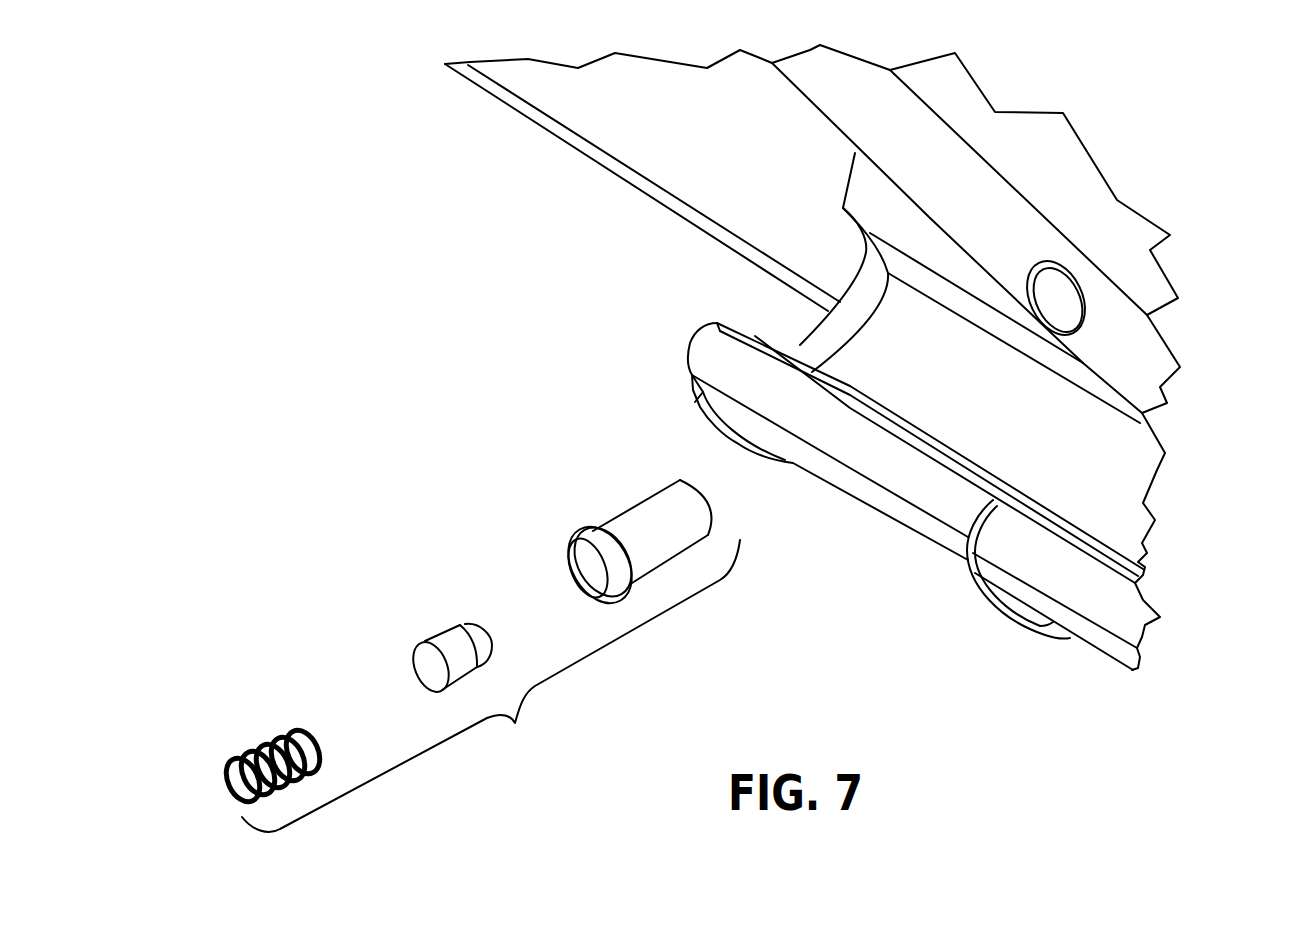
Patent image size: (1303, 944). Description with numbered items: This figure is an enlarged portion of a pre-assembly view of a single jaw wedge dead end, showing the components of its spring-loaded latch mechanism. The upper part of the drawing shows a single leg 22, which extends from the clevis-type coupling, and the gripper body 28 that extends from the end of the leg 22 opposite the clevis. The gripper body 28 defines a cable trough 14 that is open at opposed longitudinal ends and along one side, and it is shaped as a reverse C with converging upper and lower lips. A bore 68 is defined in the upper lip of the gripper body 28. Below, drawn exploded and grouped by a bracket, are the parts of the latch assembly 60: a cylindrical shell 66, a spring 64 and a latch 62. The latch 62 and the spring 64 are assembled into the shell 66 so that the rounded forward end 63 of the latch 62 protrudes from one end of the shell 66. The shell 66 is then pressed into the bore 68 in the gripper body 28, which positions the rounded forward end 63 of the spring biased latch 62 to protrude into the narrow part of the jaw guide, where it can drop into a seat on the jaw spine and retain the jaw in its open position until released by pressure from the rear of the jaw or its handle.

The cable trough 14 is at (880, 357).
The single leg 22 is at (633, 143).
The gripper body 28 is at (1045, 183).
The latch assembly 60 is at (491, 686).
The latch 62 is at (443, 640).
The rounded forward end 63 is at (482, 624).
The spring 64 is at (258, 742).
The cylindrical shell 66 is at (628, 518).
The bore 68 is at (1062, 310).